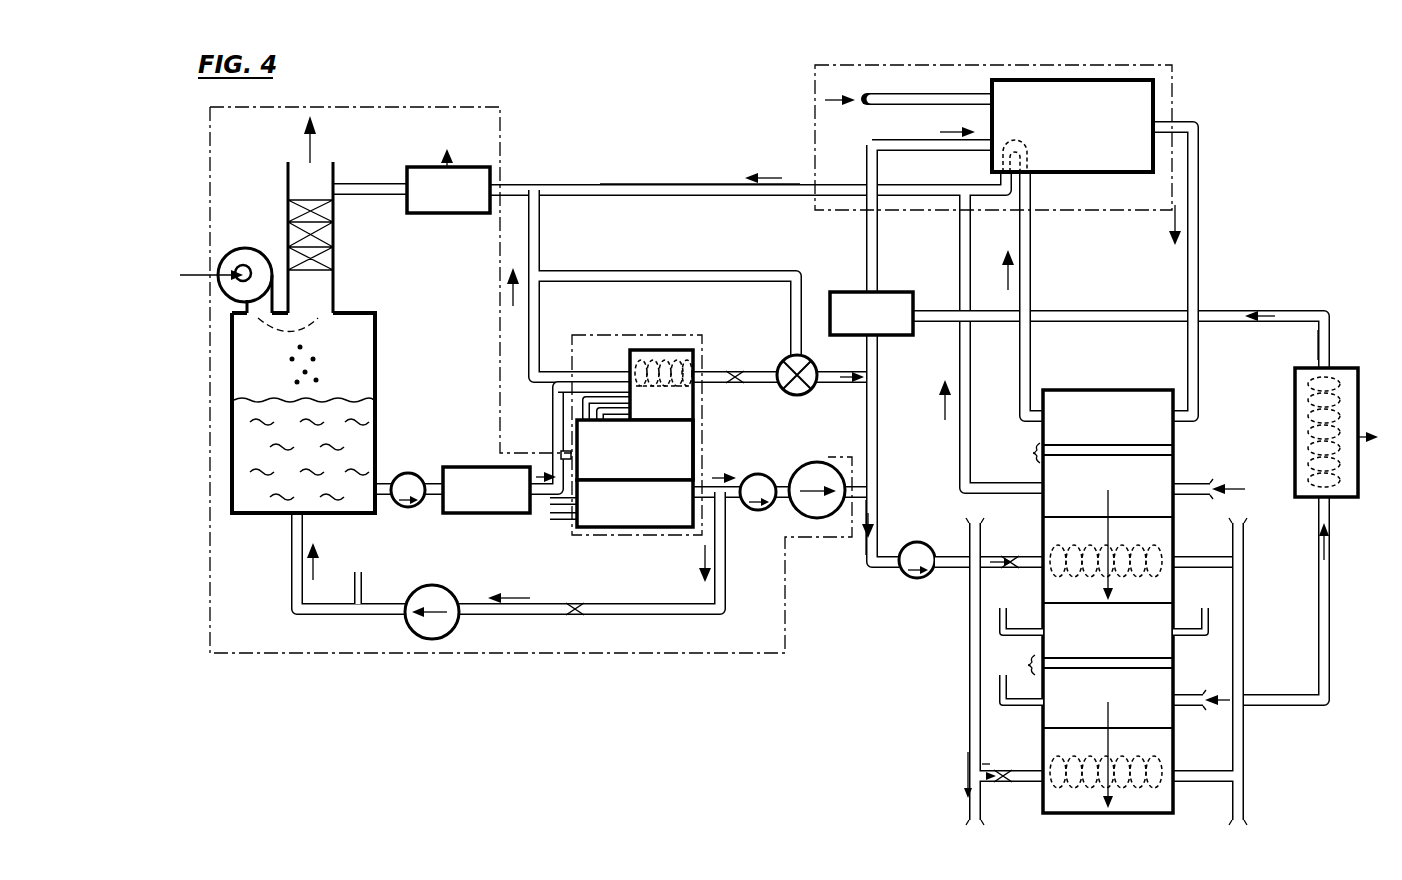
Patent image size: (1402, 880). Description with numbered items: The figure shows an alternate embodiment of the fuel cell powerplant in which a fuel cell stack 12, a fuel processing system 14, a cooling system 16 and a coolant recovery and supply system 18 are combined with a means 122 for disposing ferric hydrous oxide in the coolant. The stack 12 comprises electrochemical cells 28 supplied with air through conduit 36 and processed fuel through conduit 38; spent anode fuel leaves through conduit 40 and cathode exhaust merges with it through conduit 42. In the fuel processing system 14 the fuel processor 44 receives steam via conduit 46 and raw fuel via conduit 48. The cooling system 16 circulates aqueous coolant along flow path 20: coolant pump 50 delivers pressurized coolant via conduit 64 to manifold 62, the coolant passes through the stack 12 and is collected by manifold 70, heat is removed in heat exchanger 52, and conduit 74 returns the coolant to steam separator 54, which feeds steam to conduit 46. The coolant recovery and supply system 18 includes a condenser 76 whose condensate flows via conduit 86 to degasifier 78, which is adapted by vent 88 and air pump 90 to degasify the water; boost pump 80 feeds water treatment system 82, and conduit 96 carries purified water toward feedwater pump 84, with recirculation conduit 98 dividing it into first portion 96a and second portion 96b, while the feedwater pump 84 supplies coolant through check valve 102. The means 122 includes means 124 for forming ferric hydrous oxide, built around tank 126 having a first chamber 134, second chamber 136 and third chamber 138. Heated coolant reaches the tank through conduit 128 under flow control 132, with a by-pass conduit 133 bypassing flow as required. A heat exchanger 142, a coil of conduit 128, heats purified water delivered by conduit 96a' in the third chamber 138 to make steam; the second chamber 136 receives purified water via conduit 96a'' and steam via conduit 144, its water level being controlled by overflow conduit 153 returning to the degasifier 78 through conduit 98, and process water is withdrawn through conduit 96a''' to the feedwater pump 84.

The fuel cell stack 12 is at (1108, 380).
The fuel processing system 14 is at (1176, 78).
The cooling system 16 is at (1324, 305).
The coolant recovery and supply system 18 is at (501, 112).
The flow path 20 is at (880, 520).
The electrochemical cells 28 is at (1088, 559).
The conduit 36 is at (1206, 485).
The conduit 38 is at (1199, 408).
The conduit 40 is at (661, 193).
The conduit 42 is at (661, 193).
The fuel processor 44 is at (1072, 248).
The conduit 46 is at (879, 248).
The conduit 48 is at (912, 98).
The coolant pump 50 is at (915, 544).
The heat exchanger 52 is at (1338, 368).
The steam separator 54 is at (871, 313).
The manifold 62 is at (968, 700).
The conduit 64 is at (950, 558).
The manifold 70 is at (1246, 621).
The conduit 74 is at (1330, 337).
The condenser 76 is at (448, 171).
The degasifier 78 is at (378, 366).
The boost pump 80 is at (407, 473).
The water treatment system 82 is at (486, 490).
The feedwater pump 84 is at (766, 504).
The conduit 86 is at (346, 187).
The vent 88 is at (334, 230).
The air pump 90 is at (246, 256).
The conduit 96 is at (545, 505).
The first portion 96a is at (577, 438).
The conduit 96a' is at (583, 393).
The conduit 96a'' is at (606, 432).
The conduit 96a''' is at (739, 462).
The second portion 96b is at (740, 500).
The recirculation conduit 98 is at (726, 557).
The check valve 102 is at (830, 499).
The means for disposing ferric hydrous oxide 122 is at (706, 334).
The means for forming ferric hydrous oxide 124 is at (698, 362).
The tank 126 is at (700, 438).
The conduit 128 is at (845, 365).
The flow control 132 is at (779, 363).
The by-pass conduit 133 is at (676, 279).
The first chamber 134 is at (635, 503).
The second chamber 136 is at (635, 450).
The third chamber 138 is at (690, 392).
The heat exchanger 142 is at (664, 358).
The conduit 144 is at (624, 408).
The conduit 153 is at (360, 575).